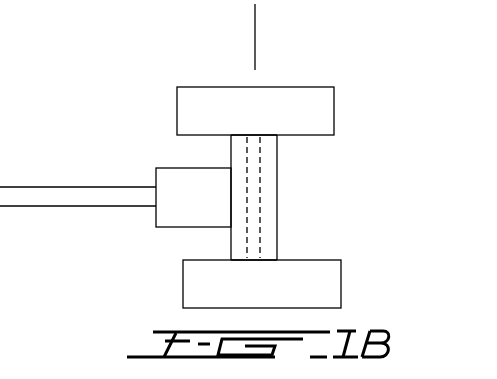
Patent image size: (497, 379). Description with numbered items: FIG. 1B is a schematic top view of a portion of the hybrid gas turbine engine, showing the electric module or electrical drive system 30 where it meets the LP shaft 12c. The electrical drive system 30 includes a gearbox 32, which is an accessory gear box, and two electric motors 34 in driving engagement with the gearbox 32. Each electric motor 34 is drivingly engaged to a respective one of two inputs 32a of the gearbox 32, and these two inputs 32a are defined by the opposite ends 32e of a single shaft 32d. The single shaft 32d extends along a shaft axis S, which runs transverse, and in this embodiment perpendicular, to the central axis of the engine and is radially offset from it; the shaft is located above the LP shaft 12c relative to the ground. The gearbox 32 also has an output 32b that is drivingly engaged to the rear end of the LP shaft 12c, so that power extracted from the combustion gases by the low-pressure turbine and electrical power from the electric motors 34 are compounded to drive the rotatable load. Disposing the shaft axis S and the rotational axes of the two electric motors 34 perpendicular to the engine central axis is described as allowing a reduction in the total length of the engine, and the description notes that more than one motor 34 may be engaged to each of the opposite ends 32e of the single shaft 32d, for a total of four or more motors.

The electrical drive system 30 is at (358, 81).
The electric motor 34 is at (215, 87).
The gearbox 32 is at (288, 206).
The single shaft 32d is at (262, 183).
The input 32a is at (255, 135).
The opposite ends of the single shaft 32e is at (255, 258).
The output 32b is at (152, 217).
The LP shaft 12c is at (52, 186).
The shaft axis S is at (255, 40).